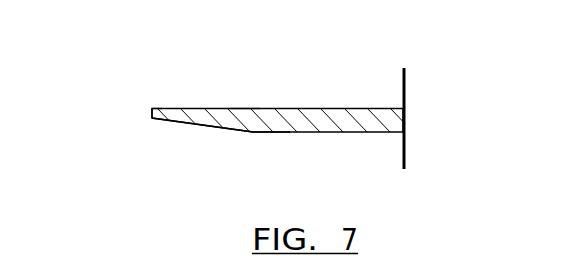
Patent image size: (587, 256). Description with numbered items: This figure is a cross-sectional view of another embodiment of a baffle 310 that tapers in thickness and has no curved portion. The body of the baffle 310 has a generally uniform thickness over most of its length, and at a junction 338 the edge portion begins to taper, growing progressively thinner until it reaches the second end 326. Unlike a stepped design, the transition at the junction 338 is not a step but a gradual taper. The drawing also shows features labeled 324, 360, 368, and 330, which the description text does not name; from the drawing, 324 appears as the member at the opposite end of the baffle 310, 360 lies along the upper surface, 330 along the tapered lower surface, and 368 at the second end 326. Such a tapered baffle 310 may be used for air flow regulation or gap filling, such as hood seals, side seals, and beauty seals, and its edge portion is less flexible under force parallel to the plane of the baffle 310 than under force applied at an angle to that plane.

The baffle 310 is at (336, 107).
The wall 324 is at (407, 120).
The second end 326 is at (151, 107).
The top surface 360 is at (244, 107).
The end face 368 is at (151, 115).
The tapered bottom surface 330 is at (203, 128).
The junction 338 is at (257, 134).